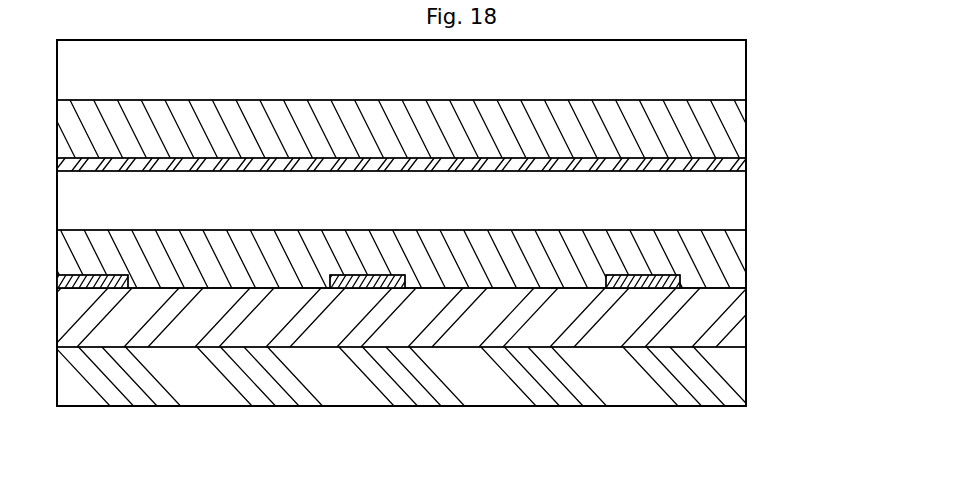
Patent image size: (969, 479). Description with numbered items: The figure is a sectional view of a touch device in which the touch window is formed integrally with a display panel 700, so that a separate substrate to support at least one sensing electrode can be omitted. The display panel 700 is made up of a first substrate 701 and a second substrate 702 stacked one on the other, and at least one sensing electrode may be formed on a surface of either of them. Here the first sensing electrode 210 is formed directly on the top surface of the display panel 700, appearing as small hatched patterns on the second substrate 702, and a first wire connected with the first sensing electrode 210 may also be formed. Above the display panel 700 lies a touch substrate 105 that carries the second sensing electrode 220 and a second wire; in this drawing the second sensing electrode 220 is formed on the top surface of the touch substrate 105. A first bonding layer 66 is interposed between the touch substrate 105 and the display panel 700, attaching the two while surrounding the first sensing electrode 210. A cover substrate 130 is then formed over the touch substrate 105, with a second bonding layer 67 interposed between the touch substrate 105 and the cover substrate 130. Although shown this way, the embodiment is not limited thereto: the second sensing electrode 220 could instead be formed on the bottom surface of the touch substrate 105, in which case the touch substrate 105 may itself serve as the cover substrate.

The cover substrate 130 is at (738, 70).
The second bonding layer 67 is at (738, 127).
The second sensing electrode 220 is at (738, 164).
The touch substrate 105 is at (738, 201).
The first bonding layer 66 is at (738, 257).
The second substrate 702 is at (738, 320).
The first substrate 701 is at (738, 375).
The display panel 700 is at (819, 307).
The first sensing electrode 210 is at (370, 288).